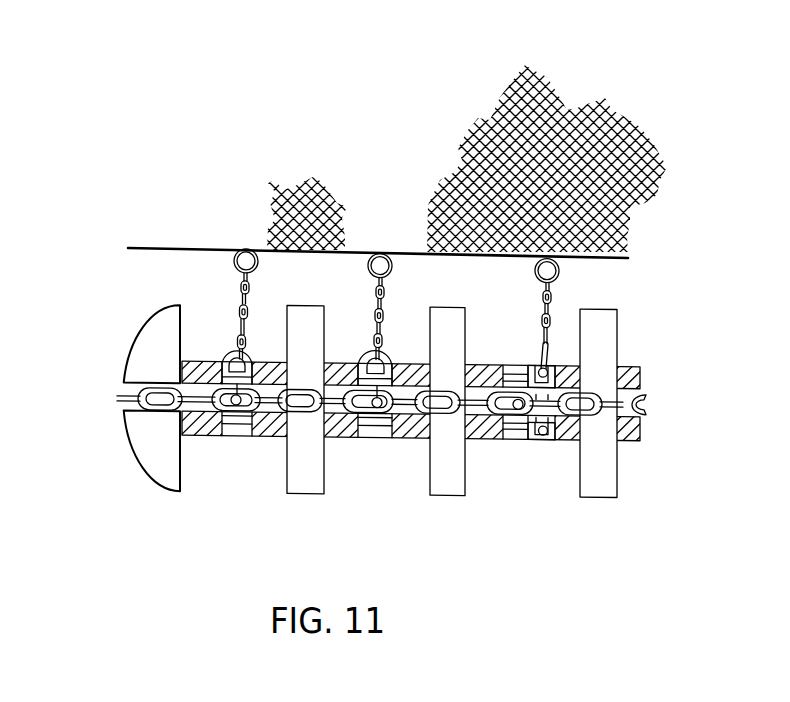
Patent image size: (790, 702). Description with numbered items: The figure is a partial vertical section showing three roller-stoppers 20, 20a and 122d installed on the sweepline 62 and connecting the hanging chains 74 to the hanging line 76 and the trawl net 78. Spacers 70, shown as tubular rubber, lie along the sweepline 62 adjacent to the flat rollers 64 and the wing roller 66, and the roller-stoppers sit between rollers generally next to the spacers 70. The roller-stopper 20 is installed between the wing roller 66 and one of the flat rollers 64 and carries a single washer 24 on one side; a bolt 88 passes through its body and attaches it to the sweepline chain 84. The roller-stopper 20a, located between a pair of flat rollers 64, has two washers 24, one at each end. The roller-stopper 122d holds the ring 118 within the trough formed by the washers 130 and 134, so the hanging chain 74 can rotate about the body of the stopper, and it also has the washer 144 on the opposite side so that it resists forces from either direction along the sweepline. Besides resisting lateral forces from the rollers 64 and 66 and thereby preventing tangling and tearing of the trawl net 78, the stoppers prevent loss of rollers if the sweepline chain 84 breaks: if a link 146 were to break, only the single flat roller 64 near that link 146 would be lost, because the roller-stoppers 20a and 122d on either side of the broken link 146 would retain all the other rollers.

The roller-stopper 20 is at (228, 458).
The roller-stopper 20a is at (375, 460).
The washer 24 is at (220, 363).
The sweepline 62 is at (662, 424).
The flat roller 64 is at (305, 494).
The wing roller 66 is at (170, 492).
The spacer 70 is at (273, 440).
The hanging chain 74 is at (552, 300).
The hanging line 76 is at (181, 247).
The trawl net 78 is at (460, 118).
The sweepline chain 84 is at (118, 404).
The bolt 88 is at (255, 388).
The ring 118 is at (541, 432).
The roller-stopper 122d is at (540, 461).
The washer 130 is at (534, 366).
The washer 134 is at (553, 364).
The washer 144 is at (506, 363).
The link 146 is at (415, 413).